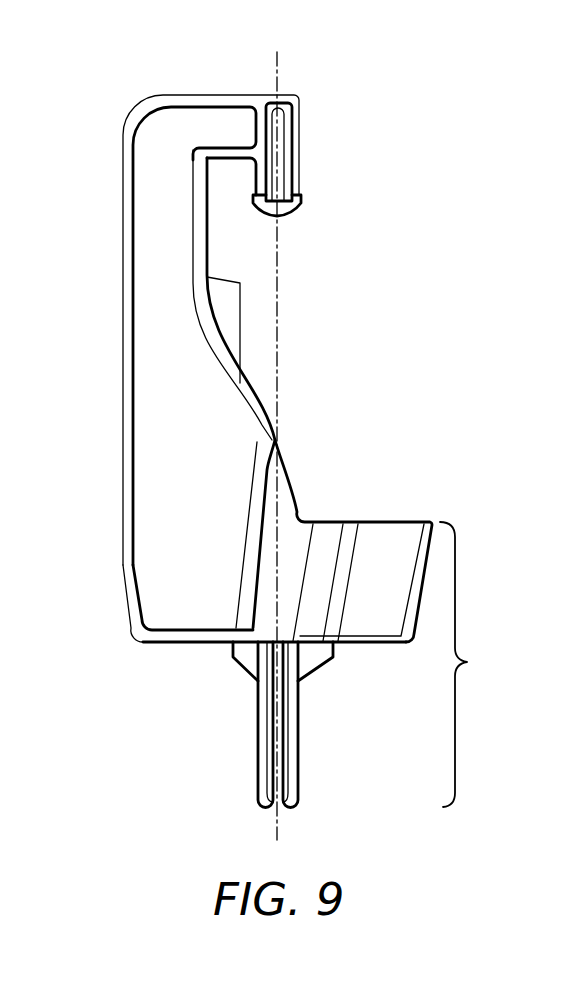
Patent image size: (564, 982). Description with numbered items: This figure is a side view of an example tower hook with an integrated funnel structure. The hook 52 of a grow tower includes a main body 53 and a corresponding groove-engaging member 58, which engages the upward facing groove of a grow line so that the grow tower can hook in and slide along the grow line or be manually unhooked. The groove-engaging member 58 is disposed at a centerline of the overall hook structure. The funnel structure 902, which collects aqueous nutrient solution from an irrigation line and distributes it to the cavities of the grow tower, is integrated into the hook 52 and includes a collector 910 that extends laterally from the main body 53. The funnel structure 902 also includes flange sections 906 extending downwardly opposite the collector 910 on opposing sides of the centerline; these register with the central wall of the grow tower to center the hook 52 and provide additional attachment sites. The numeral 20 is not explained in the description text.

The device 20 is at (549, 142).
The hook 52 is at (342, 70).
The main body 53 is at (123, 507).
The groove-engaging member 58 is at (292, 213).
The funnel structure 902 is at (467, 662).
The flange sections 906 is at (258, 733).
The collector 910 is at (392, 521).